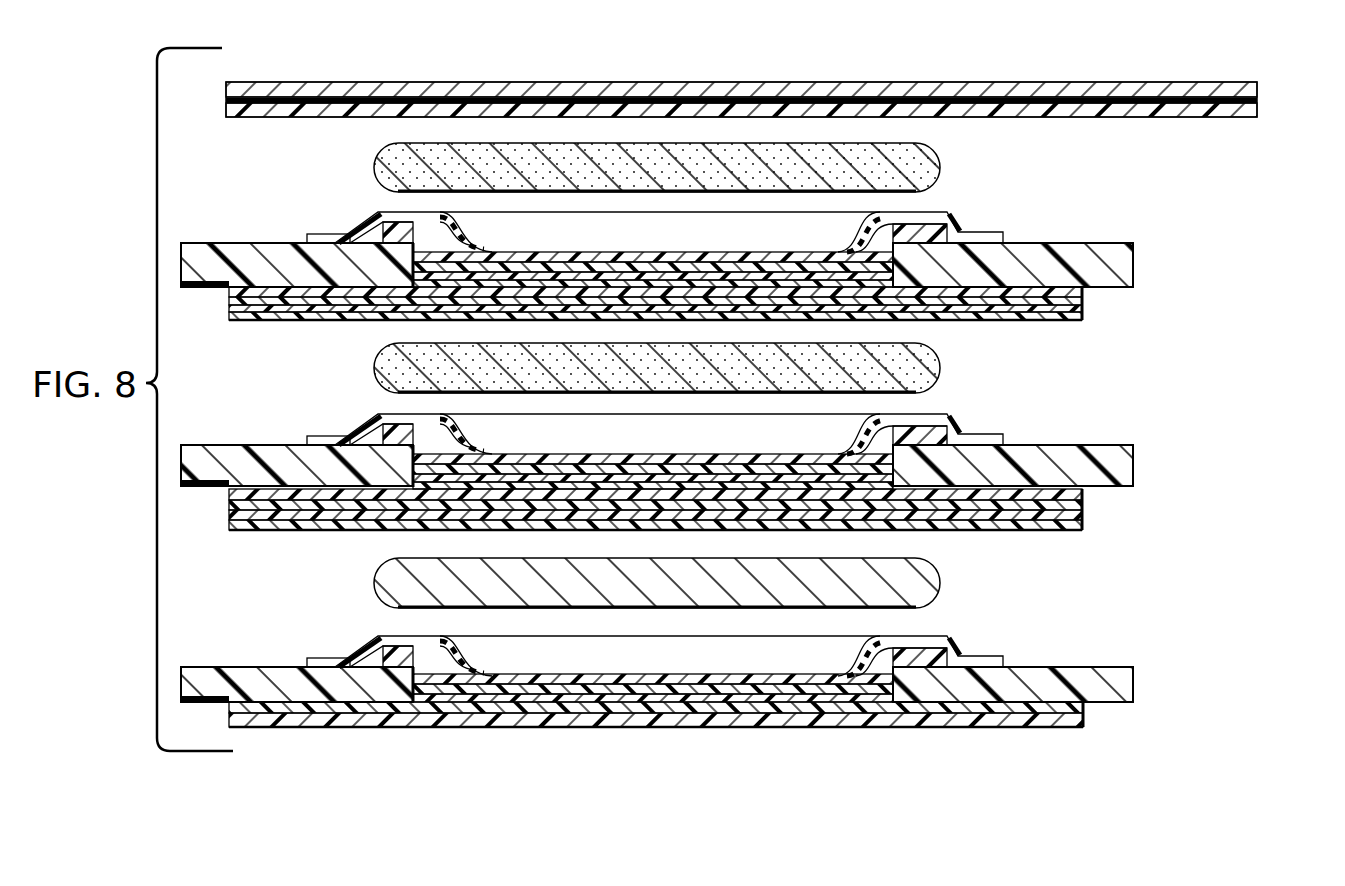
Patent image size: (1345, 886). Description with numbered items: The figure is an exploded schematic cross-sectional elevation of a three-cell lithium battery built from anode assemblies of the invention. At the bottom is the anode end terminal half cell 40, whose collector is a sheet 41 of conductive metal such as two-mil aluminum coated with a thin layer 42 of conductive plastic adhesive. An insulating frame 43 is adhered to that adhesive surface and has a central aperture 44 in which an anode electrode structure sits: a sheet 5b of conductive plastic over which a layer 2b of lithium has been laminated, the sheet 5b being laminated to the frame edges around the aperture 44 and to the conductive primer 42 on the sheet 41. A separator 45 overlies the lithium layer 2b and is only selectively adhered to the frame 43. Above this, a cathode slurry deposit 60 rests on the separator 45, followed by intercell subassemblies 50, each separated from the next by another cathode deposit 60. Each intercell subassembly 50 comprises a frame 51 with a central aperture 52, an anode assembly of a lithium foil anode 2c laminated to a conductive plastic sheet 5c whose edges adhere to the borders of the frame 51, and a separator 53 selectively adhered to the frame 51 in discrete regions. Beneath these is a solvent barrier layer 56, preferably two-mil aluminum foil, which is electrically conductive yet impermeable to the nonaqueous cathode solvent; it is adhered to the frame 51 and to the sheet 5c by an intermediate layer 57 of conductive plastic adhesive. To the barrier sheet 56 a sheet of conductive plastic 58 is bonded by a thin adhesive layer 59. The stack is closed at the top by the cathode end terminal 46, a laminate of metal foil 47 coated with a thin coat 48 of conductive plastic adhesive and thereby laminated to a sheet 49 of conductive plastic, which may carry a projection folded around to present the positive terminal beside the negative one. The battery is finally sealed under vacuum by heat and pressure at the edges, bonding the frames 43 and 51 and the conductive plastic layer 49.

The cathode end terminal 46 is at (776, 92).
The metal foil 47 is at (1135, 82).
The coat of conductive plastic adhesive 48 is at (1020, 97).
The sheet of conductive plastic 49 is at (1226, 117).
The cathode slurry deposit 60 is at (940, 163).
The intercell subassembly 50 is at (701, 364).
The frame 51 is at (250, 243).
The central aperture 52 is at (417, 255).
The separator 53 is at (778, 252).
The lithium foil anode 2c is at (932, 222).
The conductive plastic sheet 5c is at (885, 260).
The solvent barrier layer 56 is at (1085, 294).
The layer of conductive plastic adhesive 57 is at (1048, 284).
The sheet of conductive plastic 58 is at (1083, 314).
The layer of conductive plastic adhesive 59 is at (1008, 308).
The anode end terminal half cell 40 is at (678, 678).
The insulating frame 43 is at (263, 667).
The central aperture 44 is at (868, 667).
The separator 45 is at (943, 638).
The layer of lithium 2b is at (795, 670).
The sheet of conductive plastic 5b is at (913, 720).
The sheet of conductive metal 41 is at (1085, 714).
The layer of conductive plastic adhesive 42 is at (1027, 710).